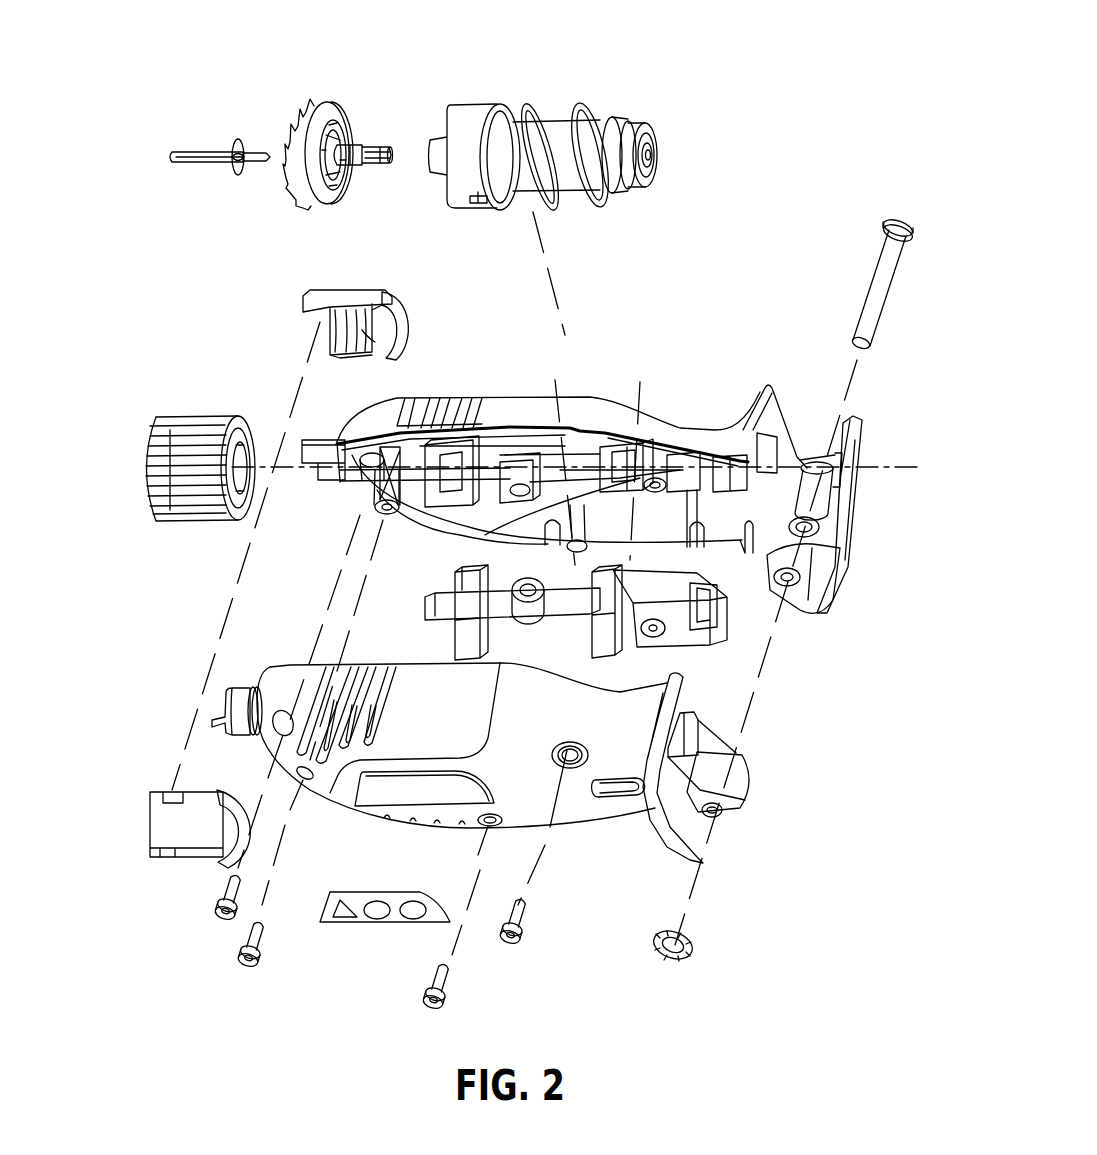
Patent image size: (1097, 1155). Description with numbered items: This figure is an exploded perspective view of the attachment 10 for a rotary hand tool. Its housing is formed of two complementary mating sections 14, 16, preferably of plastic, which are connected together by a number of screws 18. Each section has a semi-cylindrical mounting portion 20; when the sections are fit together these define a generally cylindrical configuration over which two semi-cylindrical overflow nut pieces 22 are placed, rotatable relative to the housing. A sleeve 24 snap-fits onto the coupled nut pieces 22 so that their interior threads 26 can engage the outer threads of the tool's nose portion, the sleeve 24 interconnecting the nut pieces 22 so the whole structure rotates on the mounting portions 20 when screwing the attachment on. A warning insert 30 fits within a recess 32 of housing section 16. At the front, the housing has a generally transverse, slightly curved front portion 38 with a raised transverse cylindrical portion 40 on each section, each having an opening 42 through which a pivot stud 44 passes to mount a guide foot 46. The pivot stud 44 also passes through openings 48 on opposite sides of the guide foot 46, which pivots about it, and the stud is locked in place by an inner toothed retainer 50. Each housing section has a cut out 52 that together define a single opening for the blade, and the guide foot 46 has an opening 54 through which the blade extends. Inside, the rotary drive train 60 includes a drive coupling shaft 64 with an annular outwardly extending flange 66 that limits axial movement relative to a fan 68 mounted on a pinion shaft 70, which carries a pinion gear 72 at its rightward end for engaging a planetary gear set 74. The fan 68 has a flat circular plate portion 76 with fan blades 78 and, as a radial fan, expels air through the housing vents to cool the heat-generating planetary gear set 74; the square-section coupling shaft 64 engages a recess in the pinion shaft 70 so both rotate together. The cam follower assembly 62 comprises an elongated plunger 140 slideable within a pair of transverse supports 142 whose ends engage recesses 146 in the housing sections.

The attachment 10 is at (808, 70).
The housing section 14 is at (560, 603).
The housing section 16 is at (480, 766).
The screws 18 is at (240, 950).
The semi-cylindrical mounting portion 20 is at (312, 440).
The overflow nut pieces 22 is at (352, 290).
The sleeve 24 is at (181, 424).
The interior threads 26 is at (372, 344).
The warning insert 30 is at (365, 922).
The recess 32 is at (400, 791).
The front portion 38 is at (776, 420).
The raised transverse cylindrical portion 40 is at (810, 470).
The opening 42 is at (822, 540).
The pivot stud 44 is at (882, 274).
The guide foot 46 is at (828, 592).
The openings 48 is at (790, 590).
The inner toothed retainer 50 is at (692, 955).
The cut out 52 is at (752, 535).
The opening 54 is at (852, 504).
The rotary drive train 60 is at (652, 82).
The cam follower assembly 62 is at (590, 624).
The drive coupling shaft 64 is at (196, 150).
The annular flange 66 is at (244, 140).
The fan 68 is at (328, 156).
The pinion shaft 70 is at (360, 150).
The pinion gear 72 is at (381, 166).
The planetary gear set 74 is at (472, 96).
The flat circular plate portion 76 is at (329, 202).
The fan blades 78 is at (298, 190).
The plunger 140 is at (442, 586).
The supports 142 is at (432, 612).
The recesses 146 is at (478, 547).